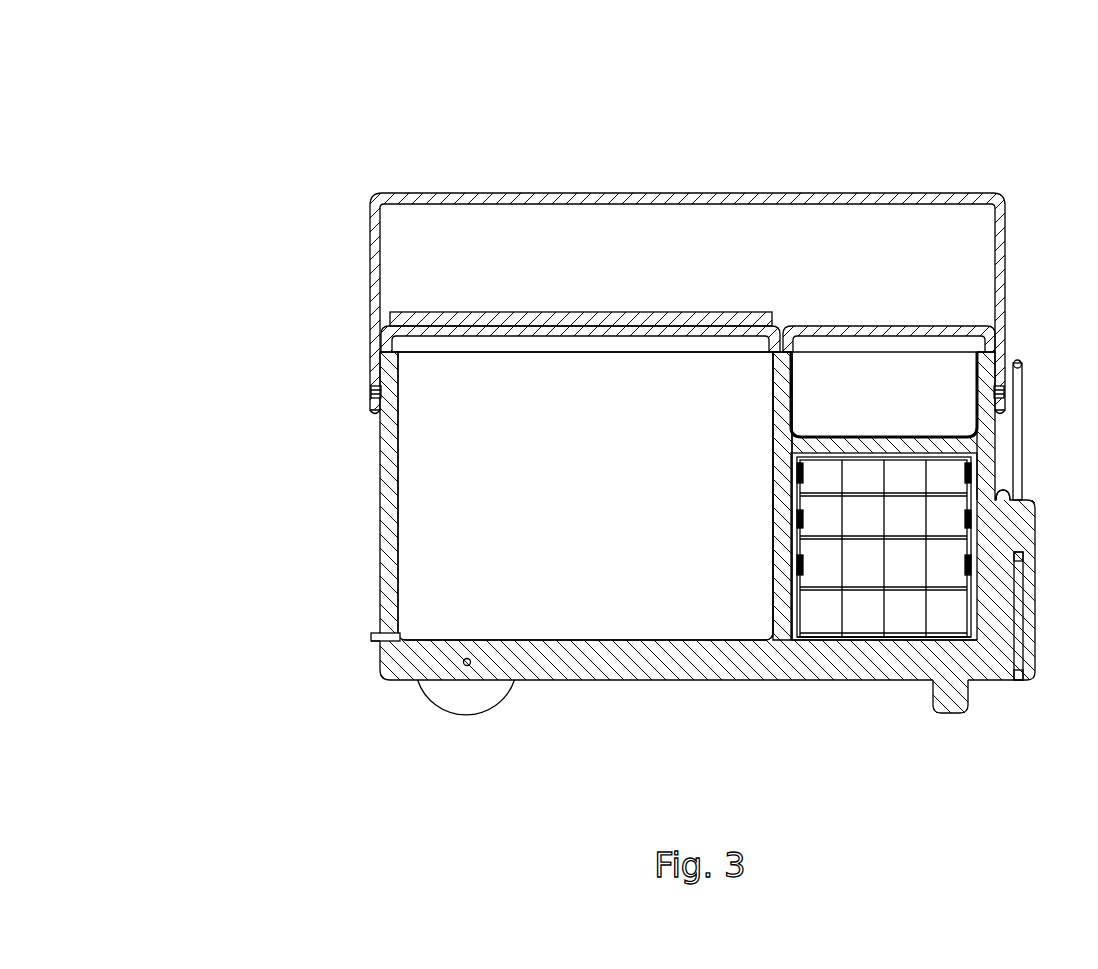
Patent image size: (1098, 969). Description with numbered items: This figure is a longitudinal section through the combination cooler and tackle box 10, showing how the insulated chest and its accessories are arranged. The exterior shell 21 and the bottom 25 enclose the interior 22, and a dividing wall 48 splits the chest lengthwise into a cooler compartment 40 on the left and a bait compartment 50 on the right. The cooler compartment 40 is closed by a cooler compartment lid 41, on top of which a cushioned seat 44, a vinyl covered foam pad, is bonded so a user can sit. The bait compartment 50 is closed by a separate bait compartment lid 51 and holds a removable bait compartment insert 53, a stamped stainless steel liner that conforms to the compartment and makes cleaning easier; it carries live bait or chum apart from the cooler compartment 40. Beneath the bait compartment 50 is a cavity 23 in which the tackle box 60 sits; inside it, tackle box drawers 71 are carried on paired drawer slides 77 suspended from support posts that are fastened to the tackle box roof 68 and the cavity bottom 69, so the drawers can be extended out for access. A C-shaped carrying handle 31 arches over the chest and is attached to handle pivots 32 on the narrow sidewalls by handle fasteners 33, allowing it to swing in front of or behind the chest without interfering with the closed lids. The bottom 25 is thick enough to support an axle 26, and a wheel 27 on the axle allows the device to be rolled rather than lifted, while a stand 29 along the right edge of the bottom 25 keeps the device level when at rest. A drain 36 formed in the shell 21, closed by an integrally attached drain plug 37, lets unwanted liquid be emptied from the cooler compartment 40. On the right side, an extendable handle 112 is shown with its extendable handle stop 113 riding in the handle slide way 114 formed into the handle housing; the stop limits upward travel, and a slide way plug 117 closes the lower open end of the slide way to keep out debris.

The combination cooler and tackle box 10 is at (210, 160).
The exterior shell 21 is at (699, 508).
The interior 22 is at (444, 534).
The cavity 23 is at (797, 530).
The bottom 25 is at (597, 681).
The axle 26 is at (465, 665).
The wheel 27 is at (500, 706).
The stand 29 is at (972, 700).
The carrying handle 31 is at (371, 270).
The handle pivot 32 is at (374, 388).
The handle fastener 33 is at (373, 394).
The drain 36 is at (374, 644).
The drain plug 37 is at (372, 631).
The cooler compartment 40 is at (555, 367).
The cooler compartment lid 41 is at (542, 334).
The cushioned seat 44 is at (436, 311).
The dividing wall 48 is at (790, 362).
The bait compartment 50 is at (935, 362).
The bait compartment lid 51 is at (888, 327).
The bait compartment insert 53 is at (980, 425).
The tackle box 60 is at (835, 593).
The tackle box roof 68 is at (1004, 493).
The cavity bottom 69 is at (936, 641).
The tackle box drawer 71 is at (806, 580).
The drawer slide 77 is at (797, 614).
The extendable handle 112 is at (1023, 385).
The extendable handle stop 113 is at (1024, 555).
The handle slide way 114 is at (1021, 635).
The slide way plug 117 is at (1019, 681).